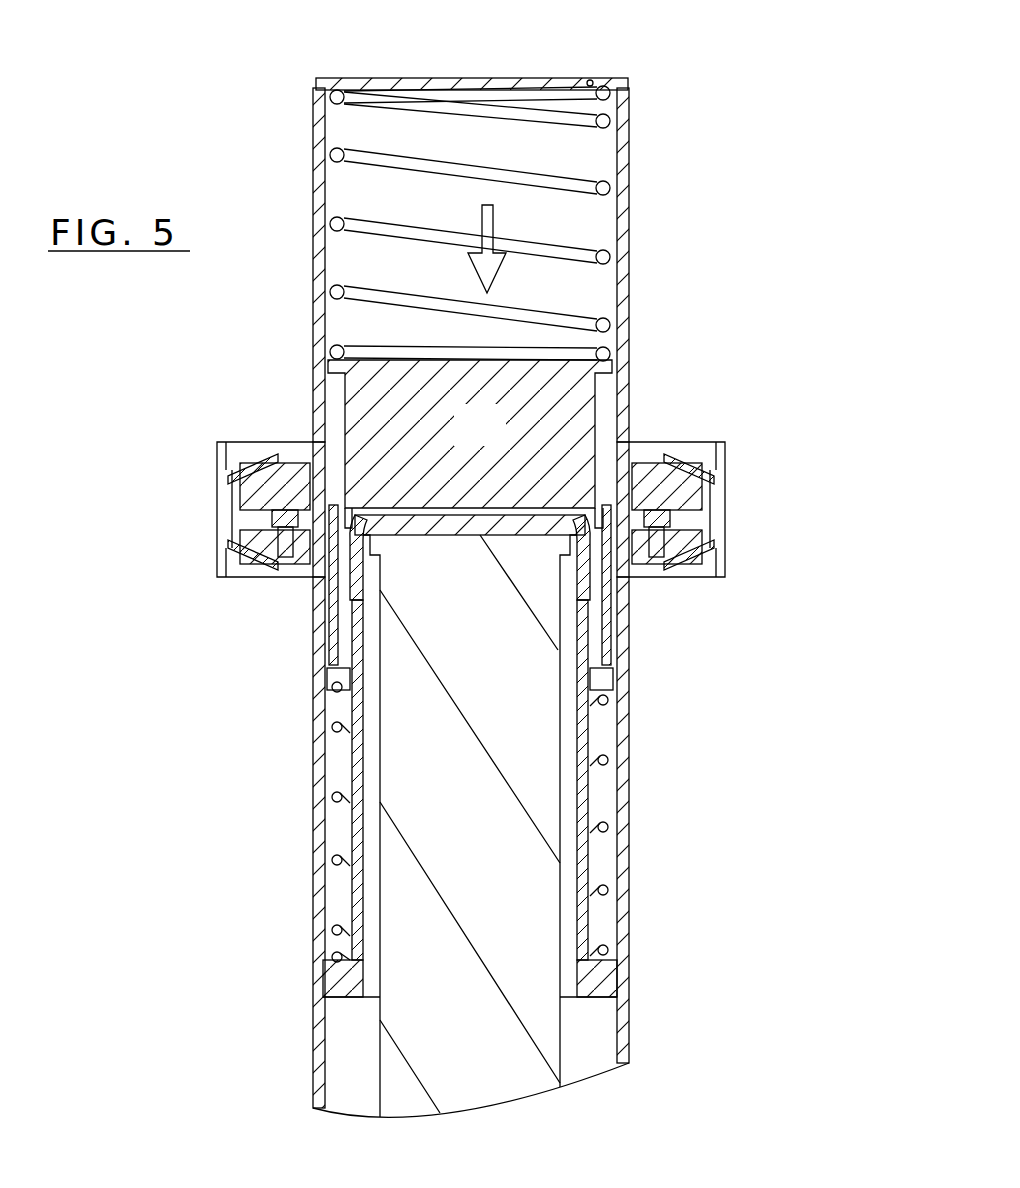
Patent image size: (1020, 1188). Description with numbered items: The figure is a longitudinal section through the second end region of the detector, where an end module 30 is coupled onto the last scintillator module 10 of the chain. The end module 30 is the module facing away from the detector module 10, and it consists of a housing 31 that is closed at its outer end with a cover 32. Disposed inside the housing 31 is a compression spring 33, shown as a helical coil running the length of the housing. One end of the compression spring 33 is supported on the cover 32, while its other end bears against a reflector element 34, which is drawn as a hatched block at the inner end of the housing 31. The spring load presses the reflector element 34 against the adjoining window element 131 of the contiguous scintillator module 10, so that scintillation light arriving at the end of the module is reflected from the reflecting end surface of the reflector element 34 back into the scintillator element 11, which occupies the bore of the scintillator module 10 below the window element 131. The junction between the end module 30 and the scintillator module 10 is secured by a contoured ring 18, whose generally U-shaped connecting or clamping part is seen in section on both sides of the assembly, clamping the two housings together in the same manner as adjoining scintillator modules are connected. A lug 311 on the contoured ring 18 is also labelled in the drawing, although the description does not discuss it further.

The scintillator module 10 is at (516, 771).
The scintillator element 11 is at (492, 770).
The contoured ring 18 is at (524, 501).
The end module 30 is at (537, 268).
The housing 31 is at (632, 370).
The cover 32 is at (588, 80).
The compression spring 33 is at (590, 178).
The reflector element 34 is at (500, 443).
The window element 131 is at (405, 545).
The retaining tab 311 is at (722, 462).